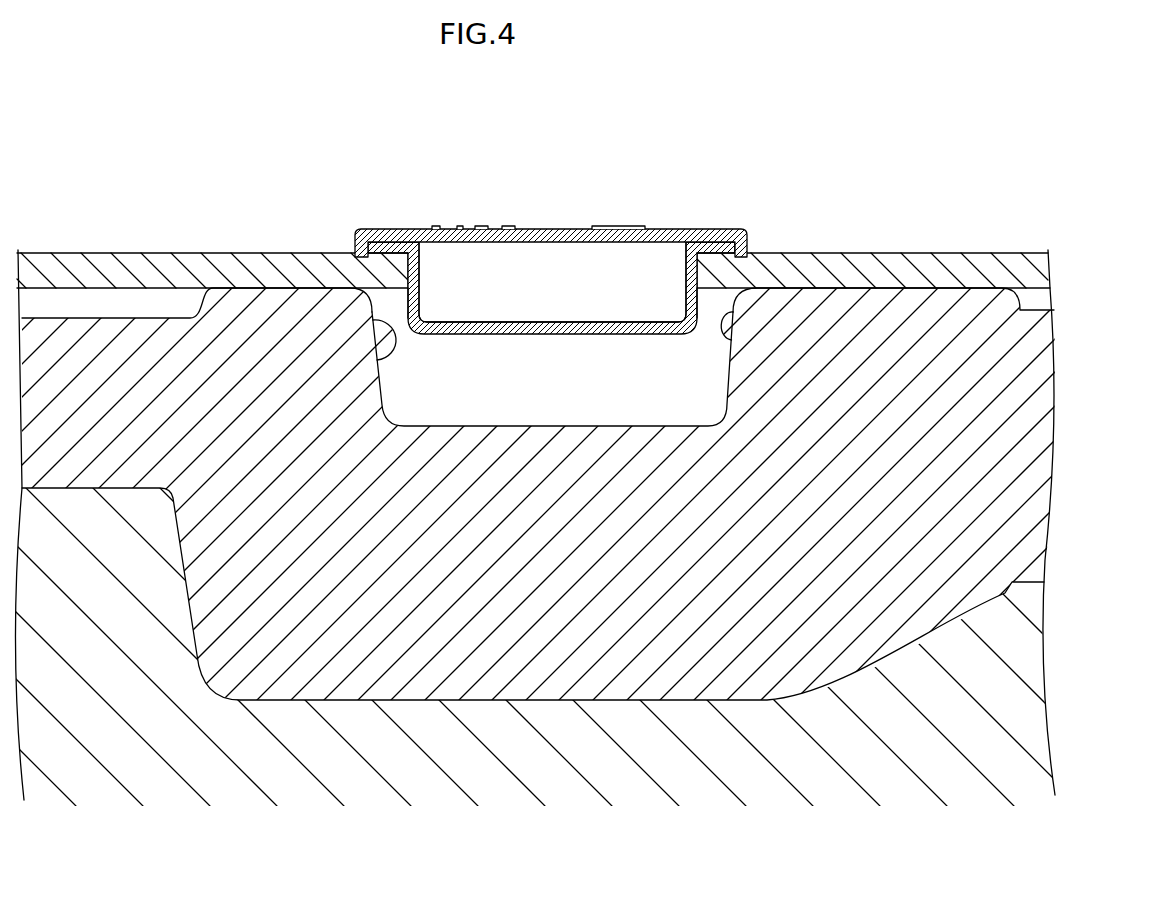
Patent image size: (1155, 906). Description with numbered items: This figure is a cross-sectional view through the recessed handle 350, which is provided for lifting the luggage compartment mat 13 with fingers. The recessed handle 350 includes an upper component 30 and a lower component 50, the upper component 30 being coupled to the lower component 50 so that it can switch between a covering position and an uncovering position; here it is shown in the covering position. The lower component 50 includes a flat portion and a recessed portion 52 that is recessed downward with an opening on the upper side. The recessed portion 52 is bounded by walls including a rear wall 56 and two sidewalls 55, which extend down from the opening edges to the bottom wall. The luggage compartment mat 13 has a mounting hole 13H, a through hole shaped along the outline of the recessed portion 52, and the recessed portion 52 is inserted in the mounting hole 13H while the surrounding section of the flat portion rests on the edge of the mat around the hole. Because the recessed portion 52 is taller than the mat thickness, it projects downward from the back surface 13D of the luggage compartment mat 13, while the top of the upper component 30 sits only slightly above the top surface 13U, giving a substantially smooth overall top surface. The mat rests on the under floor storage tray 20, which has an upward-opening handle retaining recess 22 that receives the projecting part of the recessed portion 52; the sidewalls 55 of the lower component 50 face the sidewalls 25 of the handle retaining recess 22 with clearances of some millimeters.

The luggage compartment mat 13 is at (570, 231).
The top surface of the luggage compartment mat 13U is at (990, 252).
The back surface of the luggage compartment mat 13D is at (1052, 309).
The mounting hole 13H is at (697, 272).
The under floor storage tray 20 is at (573, 440).
The handle retaining recess 22 is at (686, 424).
The sidewalls of the handle retaining recess 25 is at (393, 360).
The upper component 30 is at (570, 228).
The lower component 50 is at (552, 208).
The recessed portion 52 is at (420, 277).
The sidewalls 55 is at (408, 302).
The rear wall 56 is at (518, 284).
The recessed handle 350 is at (552, 186).